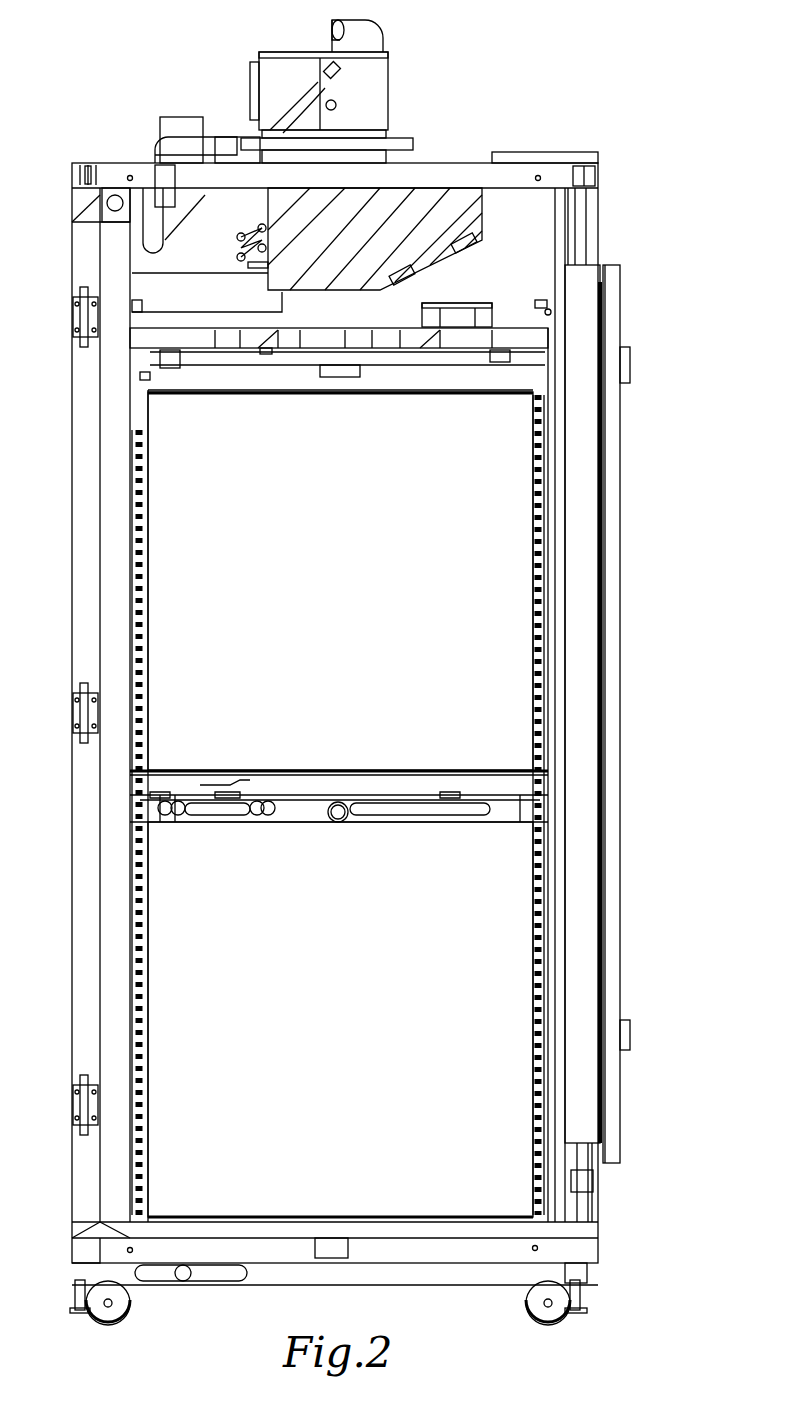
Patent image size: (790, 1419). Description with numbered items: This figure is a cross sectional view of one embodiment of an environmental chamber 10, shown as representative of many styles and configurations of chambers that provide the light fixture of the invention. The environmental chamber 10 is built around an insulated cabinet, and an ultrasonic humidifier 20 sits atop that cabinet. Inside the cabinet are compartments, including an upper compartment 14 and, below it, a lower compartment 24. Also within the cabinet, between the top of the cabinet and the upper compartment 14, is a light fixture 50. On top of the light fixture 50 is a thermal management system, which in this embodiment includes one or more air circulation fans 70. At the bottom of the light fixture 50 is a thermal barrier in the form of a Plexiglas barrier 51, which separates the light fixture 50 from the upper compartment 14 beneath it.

The environmental chamber 10 is at (592, 72).
The ultrasonic humidifier 20 is at (372, 78).
The air circulation fan 70 is at (458, 303).
The light fixture 50 is at (515, 328).
The Plexiglas barrier 51 is at (327, 395).
The upper compartment 14 is at (482, 550).
The lower compartment 24 is at (488, 950).